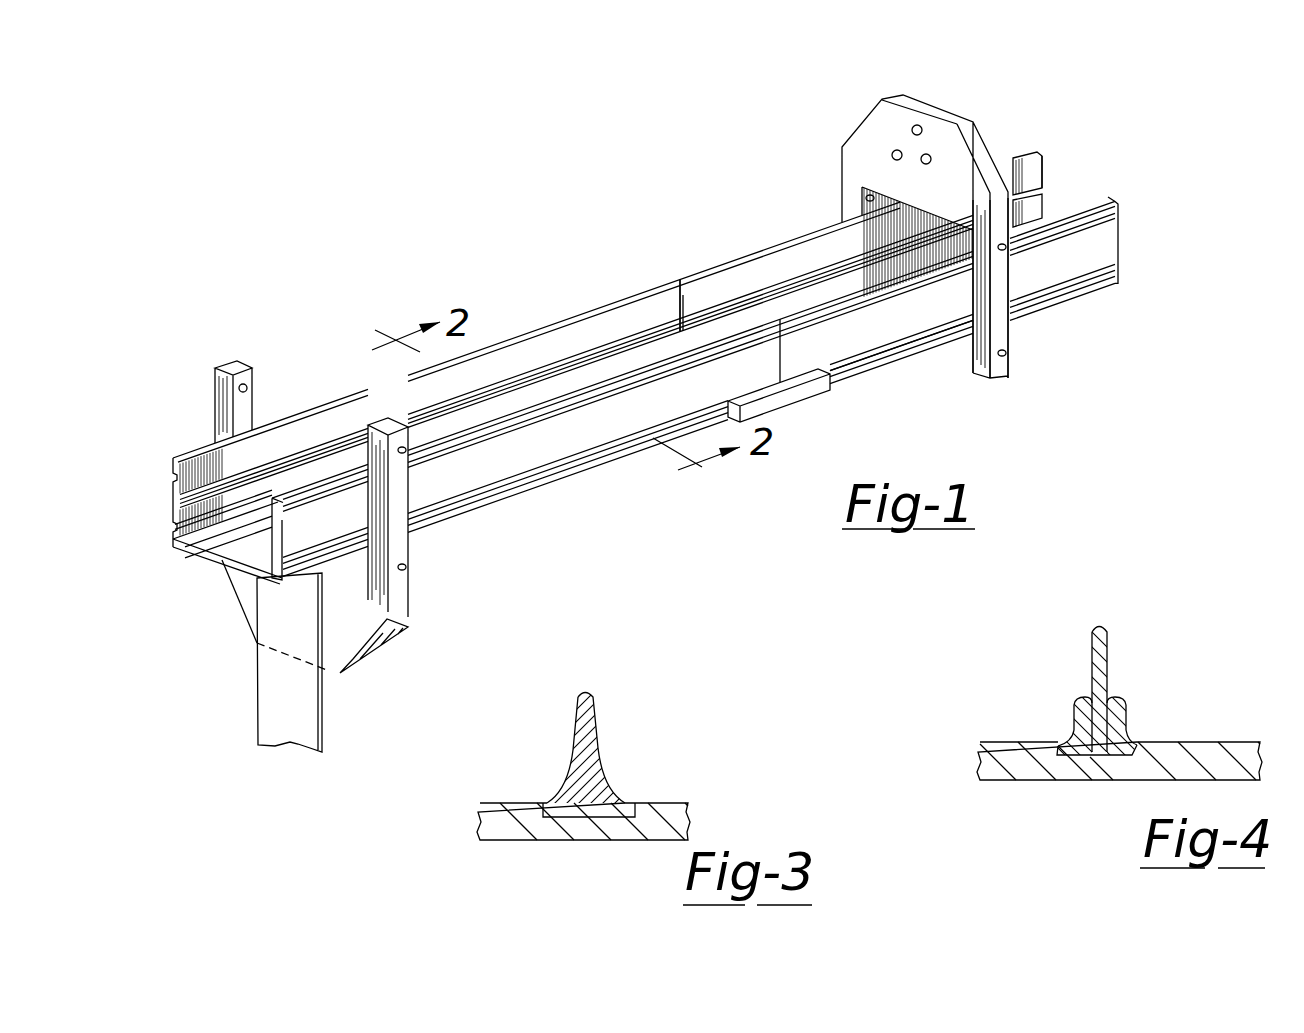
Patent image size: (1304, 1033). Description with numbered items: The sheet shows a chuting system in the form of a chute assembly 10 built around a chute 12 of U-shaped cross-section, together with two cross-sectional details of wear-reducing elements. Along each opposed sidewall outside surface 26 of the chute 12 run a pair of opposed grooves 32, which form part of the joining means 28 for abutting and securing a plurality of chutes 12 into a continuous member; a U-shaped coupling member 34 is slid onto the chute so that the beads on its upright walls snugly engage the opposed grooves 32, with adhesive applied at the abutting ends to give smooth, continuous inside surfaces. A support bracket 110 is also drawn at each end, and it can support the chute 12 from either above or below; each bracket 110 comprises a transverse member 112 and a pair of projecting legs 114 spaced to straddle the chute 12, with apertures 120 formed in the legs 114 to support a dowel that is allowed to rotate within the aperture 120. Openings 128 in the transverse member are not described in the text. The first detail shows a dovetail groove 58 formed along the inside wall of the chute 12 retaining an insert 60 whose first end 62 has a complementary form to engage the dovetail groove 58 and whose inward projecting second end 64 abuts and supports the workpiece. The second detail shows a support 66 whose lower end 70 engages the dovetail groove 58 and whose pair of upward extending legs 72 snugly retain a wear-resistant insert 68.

In FIG. 1, the chute assembly 10 is at (738, 248).
In FIG. 1, the chute 12 is at (645, 268).
In FIG. 1, the opposed sidewall outside surface 26 is at (553, 454).
In FIG. 1, the joining means 28 is at (832, 355).
In FIG. 1, the opposed grooves 32 is at (500, 492).
In FIG. 1, the coupling member 34 is at (797, 410).
In FIG. 1, the support bracket 110 is at (200, 397).
In FIG. 1, the transverse member 112 is at (373, 660).
In FIG. 1, the projecting legs 114 is at (409, 549).
In FIG. 1, the apertures 120 is at (248, 388).
In FIG. 1, the mounting holes 128 is at (926, 154).
In FIG. 3, the dovetail grooves 58 is at (585, 813).
In FIG. 4, the dovetail grooves 58 is at (1093, 758).
In FIG. 3, the insert 60 is at (585, 755).
In FIG. 3, the first end 62 is at (637, 804).
In FIG. 3, the second end 64 is at (590, 692).
In FIG. 4, the support 66 is at (1078, 690).
In FIG. 4, the wear-resistant insert 68 is at (1108, 628).
In FIG. 4, the lower end 70 is at (1153, 742).
In FIG. 4, the upward extending legs 72 is at (1072, 700).